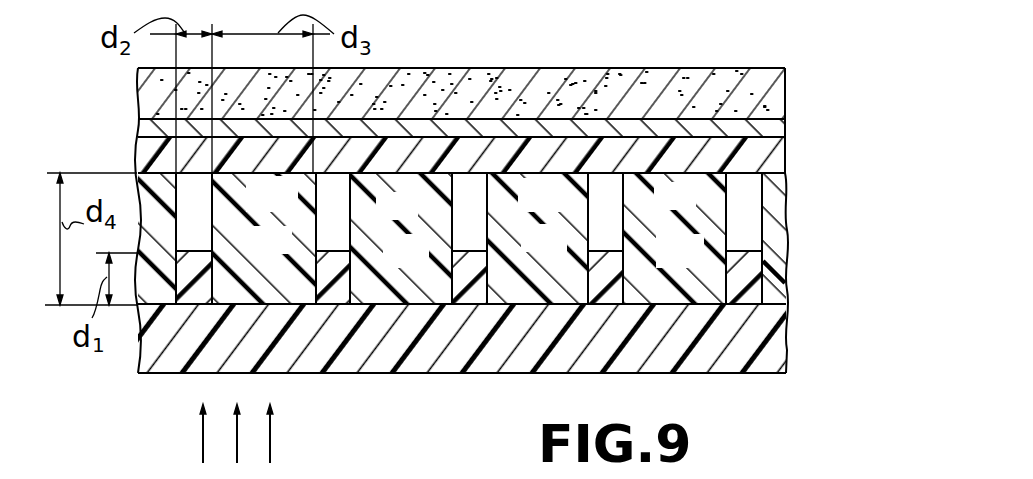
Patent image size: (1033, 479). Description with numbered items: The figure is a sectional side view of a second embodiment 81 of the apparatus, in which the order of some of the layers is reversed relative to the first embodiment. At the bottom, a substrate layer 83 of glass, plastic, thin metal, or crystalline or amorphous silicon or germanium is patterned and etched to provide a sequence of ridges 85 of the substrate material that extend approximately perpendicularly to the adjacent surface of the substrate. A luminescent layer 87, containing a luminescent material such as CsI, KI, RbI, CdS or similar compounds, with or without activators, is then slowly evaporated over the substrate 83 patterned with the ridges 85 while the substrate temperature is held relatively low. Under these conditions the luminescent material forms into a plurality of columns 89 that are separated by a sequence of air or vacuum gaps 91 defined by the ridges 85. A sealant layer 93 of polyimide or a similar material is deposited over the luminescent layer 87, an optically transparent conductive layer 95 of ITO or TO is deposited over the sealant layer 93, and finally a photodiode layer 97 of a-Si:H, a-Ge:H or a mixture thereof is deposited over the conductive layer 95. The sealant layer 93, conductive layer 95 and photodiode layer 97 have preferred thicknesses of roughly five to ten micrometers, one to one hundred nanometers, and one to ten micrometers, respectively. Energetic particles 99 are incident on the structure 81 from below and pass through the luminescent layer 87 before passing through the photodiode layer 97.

The second embodiment 81 is at (724, 48).
The substrate layer 83 is at (787, 330).
The ridges 85 is at (330, 268).
The luminescent layer 87 is at (787, 232).
The columns 89 is at (292, 208).
The air or vacuum gaps 91 is at (467, 222).
The sealant layer 93 is at (787, 147).
The optically transparent conductive layer 95 is at (787, 124).
The photodiode layer 97 is at (787, 96).
The energetic particles 99 is at (203, 441).